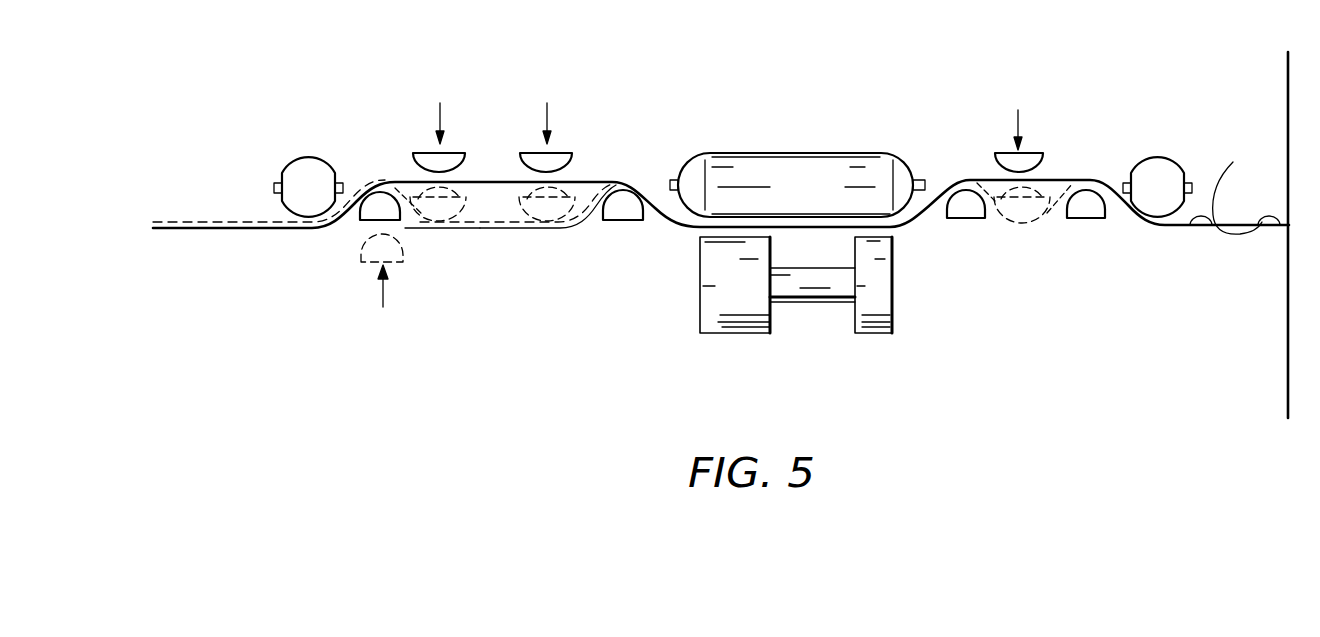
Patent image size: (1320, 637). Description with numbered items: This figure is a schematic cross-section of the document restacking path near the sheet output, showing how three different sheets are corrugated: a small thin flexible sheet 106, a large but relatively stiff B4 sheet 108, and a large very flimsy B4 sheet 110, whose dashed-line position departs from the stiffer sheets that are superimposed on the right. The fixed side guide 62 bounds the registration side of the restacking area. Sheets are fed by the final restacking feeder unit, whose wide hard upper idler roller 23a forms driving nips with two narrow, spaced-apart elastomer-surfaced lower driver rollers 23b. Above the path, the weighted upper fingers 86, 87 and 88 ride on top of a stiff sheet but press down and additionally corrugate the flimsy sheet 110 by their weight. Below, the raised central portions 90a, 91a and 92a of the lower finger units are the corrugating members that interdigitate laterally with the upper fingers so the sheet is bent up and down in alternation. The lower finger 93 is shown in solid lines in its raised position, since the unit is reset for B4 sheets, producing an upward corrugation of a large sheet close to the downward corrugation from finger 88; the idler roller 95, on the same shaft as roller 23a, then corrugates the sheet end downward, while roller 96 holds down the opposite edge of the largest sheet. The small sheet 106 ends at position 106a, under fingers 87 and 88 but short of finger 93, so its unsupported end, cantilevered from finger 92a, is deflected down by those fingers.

The upper cylindrical idler roller 23a is at (873, 160).
The lower driver rollers 23b is at (863, 312).
The fixed side guide 62 is at (1287, 103).
The upper finger 86 is at (1033, 157).
The upper finger 87 is at (555, 157).
The upper finger 88 is at (452, 157).
The raised central portion 90a is at (1088, 208).
The raised central portion 91a is at (970, 208).
The raised central portion 92a is at (627, 210).
The lower finger 93 is at (363, 208).
The idler roller 95 is at (313, 165).
The roller 96 is at (1157, 165).
The small thin sheet 106 is at (555, 231).
The end position of small sheet 106a is at (407, 229).
The large stiff sheet 108 is at (226, 230).
The large flimsy sheet 110 is at (205, 220).